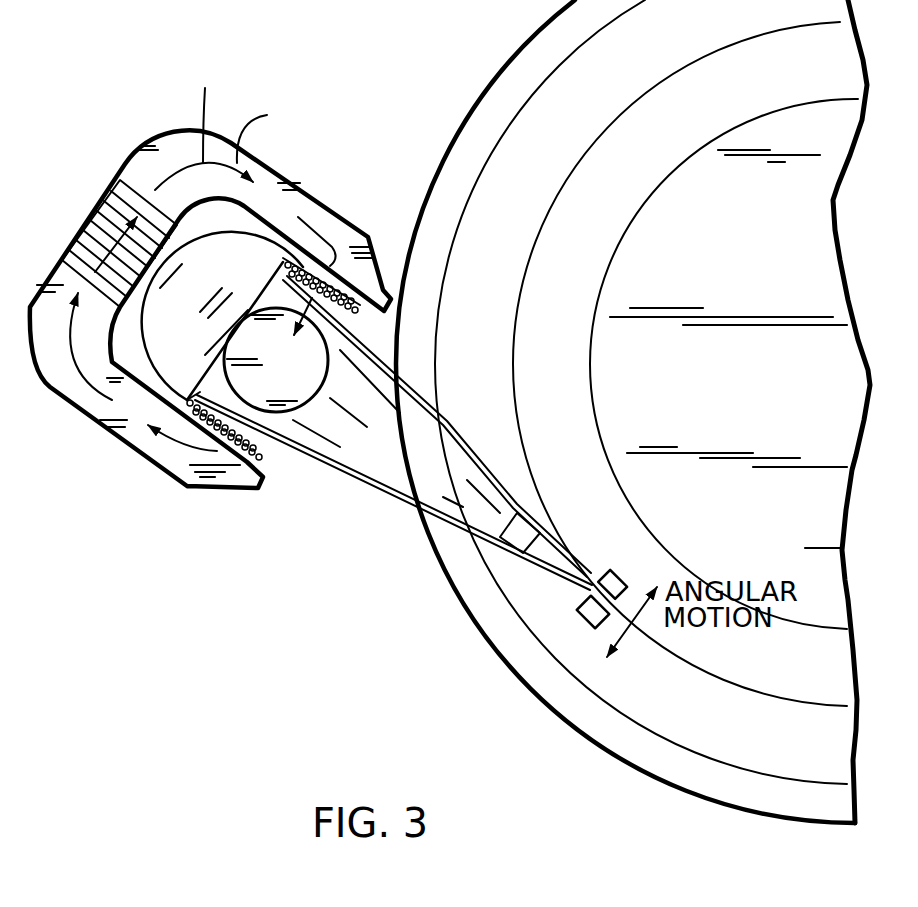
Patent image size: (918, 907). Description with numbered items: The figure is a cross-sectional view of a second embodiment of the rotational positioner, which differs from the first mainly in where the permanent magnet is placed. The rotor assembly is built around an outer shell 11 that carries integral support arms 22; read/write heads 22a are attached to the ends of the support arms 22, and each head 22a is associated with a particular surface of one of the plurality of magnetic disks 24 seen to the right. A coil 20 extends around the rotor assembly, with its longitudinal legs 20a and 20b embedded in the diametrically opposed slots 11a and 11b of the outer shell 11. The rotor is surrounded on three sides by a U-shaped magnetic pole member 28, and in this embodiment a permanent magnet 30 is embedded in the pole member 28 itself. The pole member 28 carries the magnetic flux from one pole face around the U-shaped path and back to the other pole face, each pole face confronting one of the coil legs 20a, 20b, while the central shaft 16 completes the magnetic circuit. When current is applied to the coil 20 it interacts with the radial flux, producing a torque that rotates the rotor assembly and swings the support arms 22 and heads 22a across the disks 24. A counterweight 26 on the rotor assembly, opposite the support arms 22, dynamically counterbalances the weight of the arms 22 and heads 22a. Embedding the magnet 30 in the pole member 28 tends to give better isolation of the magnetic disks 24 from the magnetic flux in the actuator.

The outer shell 11 is at (197, 325).
The slot 11a is at (190, 398).
The slot 11b is at (283, 262).
The central shaft 16 is at (316, 394).
The coil 20 is at (233, 347).
The longitudinal leg 20a is at (262, 462).
The longitudinal leg 20b is at (388, 287).
The support arms 22 is at (415, 484).
The read/write heads 22a is at (601, 572).
The magnetic disks 24 is at (765, 256).
The counterweight 26 is at (193, 278).
The U-shaped magnetic pole member 28 is at (172, 155).
The permanent magnet 30 is at (105, 213).